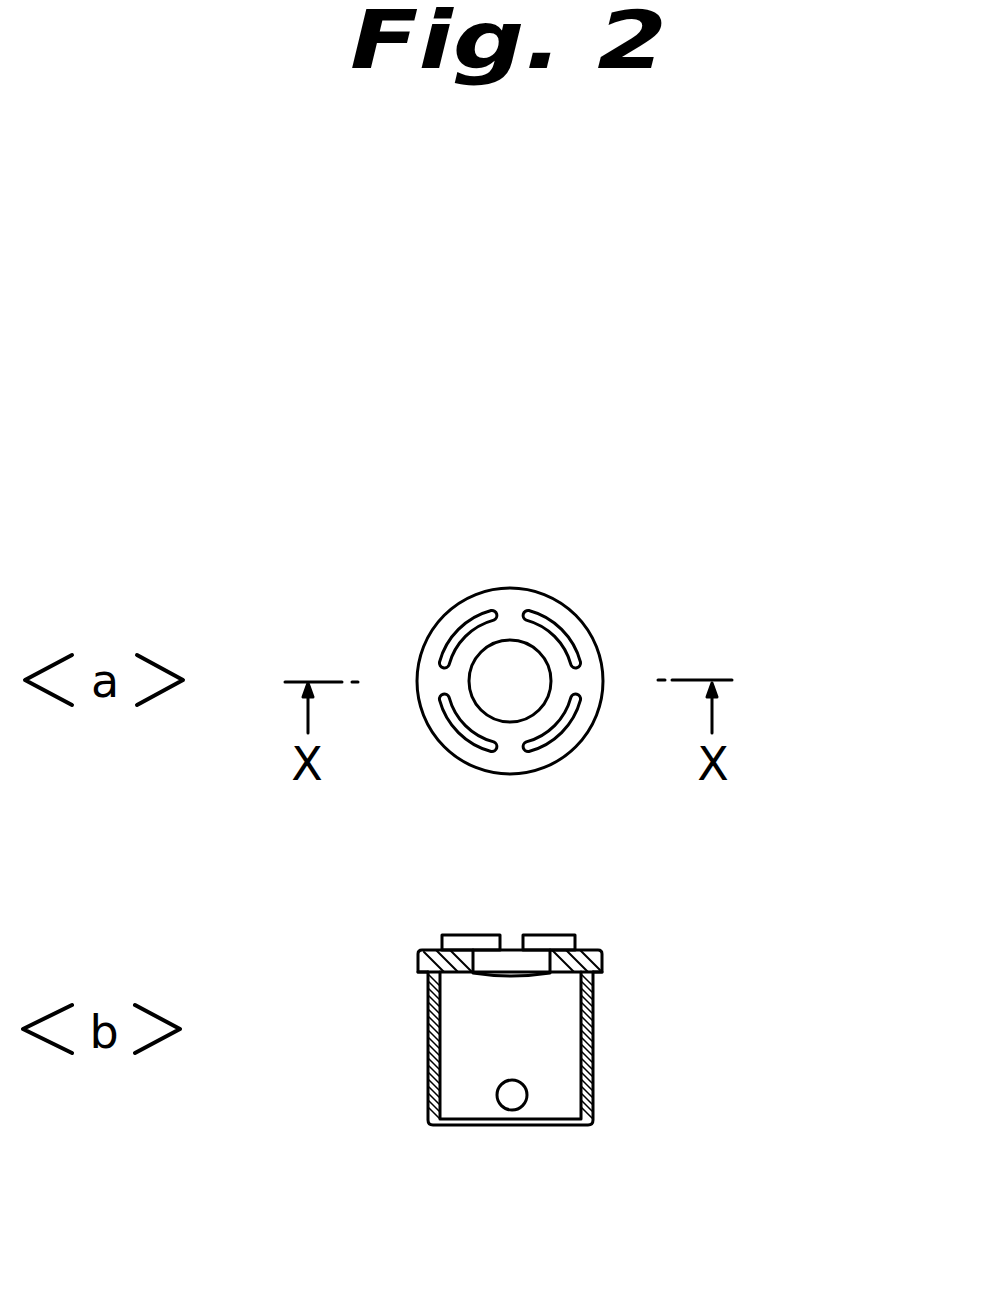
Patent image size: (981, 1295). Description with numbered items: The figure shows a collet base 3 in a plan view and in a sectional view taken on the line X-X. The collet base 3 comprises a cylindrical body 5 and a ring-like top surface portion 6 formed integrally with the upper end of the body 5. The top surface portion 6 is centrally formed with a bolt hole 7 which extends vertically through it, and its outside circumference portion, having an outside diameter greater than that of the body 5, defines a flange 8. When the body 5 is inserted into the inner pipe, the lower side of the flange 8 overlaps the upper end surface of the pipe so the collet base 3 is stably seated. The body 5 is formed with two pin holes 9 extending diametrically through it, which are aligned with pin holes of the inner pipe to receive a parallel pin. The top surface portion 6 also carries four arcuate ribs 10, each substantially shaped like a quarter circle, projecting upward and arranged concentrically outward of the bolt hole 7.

In FIG. 2A, the collet base 3 is at (599, 634).
In FIG. 2B, the collet base 3 is at (571, 1037).
In FIG. 2B, the cylindrical body 5 is at (592, 1013).
In FIG. 2A, the ring-like top surface portion 6 is at (467, 608).
In FIG. 2B, the ring-like top surface portion 6 is at (593, 950).
In FIG. 2A, the bolt hole 7 is at (523, 663).
In FIG. 2B, the bolt hole 7 is at (511, 963).
In FIG. 2B, the flange 8 is at (603, 977).
In FIG. 2B, the pin hole 9 is at (512, 1097).
In FIG. 2A, the arcuate rib 10 is at (575, 717).
In FIG. 2B, the arcuate rib 10 is at (457, 935).